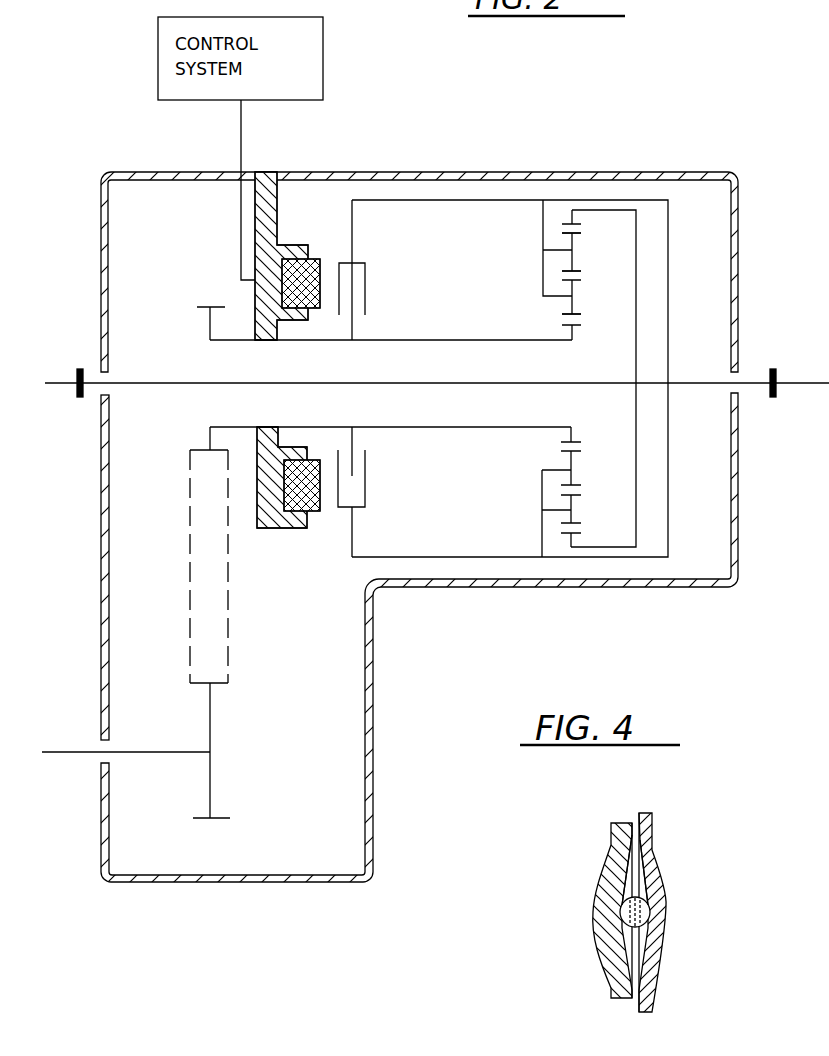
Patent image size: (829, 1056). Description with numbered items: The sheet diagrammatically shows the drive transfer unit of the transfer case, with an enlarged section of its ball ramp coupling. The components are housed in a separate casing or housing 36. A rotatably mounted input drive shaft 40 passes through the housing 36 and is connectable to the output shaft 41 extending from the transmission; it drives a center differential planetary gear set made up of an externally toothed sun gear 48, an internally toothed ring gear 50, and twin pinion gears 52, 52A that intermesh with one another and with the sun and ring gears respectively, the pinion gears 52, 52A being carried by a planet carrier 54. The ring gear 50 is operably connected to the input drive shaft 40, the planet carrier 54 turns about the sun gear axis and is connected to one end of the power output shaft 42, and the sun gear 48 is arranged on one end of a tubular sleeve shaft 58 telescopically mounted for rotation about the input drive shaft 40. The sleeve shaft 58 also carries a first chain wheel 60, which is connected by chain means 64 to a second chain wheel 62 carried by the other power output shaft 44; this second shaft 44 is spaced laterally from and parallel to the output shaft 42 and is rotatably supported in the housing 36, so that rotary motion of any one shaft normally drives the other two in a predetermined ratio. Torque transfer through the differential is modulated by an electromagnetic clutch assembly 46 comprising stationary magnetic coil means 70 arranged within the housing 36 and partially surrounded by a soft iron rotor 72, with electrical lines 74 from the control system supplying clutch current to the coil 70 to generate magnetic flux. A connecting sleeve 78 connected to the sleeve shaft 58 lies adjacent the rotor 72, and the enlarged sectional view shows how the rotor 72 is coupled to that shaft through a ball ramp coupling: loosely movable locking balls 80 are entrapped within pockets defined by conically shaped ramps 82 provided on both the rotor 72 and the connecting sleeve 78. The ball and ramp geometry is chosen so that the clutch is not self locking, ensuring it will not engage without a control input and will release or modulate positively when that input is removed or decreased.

In FIG. 2, the housing 36 is at (739, 246).
In FIG. 2, the input drive shaft 40 is at (152, 381).
In FIG. 2, the output shaft 41 is at (58, 380).
In FIG. 2, the power output shaft 42 is at (750, 382).
In FIG. 2, the power output shaft 44 is at (80, 752).
In FIG. 2, the electromagnetic clutch assembly 46 is at (378, 304).
In FIG. 2, the sun gear 48 is at (568, 330).
In FIG. 2, the ring gear 50 is at (566, 225).
In FIG. 2, the pinion gear 52 is at (581, 238).
In FIG. 2, the pinion gear 52A is at (576, 299).
In FIG. 2, the planet carrier 54 is at (543, 237).
In FIG. 2, the sleeve shaft 58 is at (415, 340).
In FIG. 2, the first chain wheel 60 is at (210, 301).
In FIG. 2, the second chain wheel 62 is at (226, 818).
In FIG. 2, the chain means 64 is at (228, 643).
In FIG. 2, the magnetic coil means 70 is at (310, 265).
In FIG. 4, the rotor 72 is at (642, 838).
In FIG. 2, the electrical lines 74 is at (241, 222).
In FIG. 4, the connecting sleeve 78 is at (612, 850).
In FIG. 4, the locking balls 80 is at (646, 915).
In FIG. 4, the ramps 82 is at (663, 881).